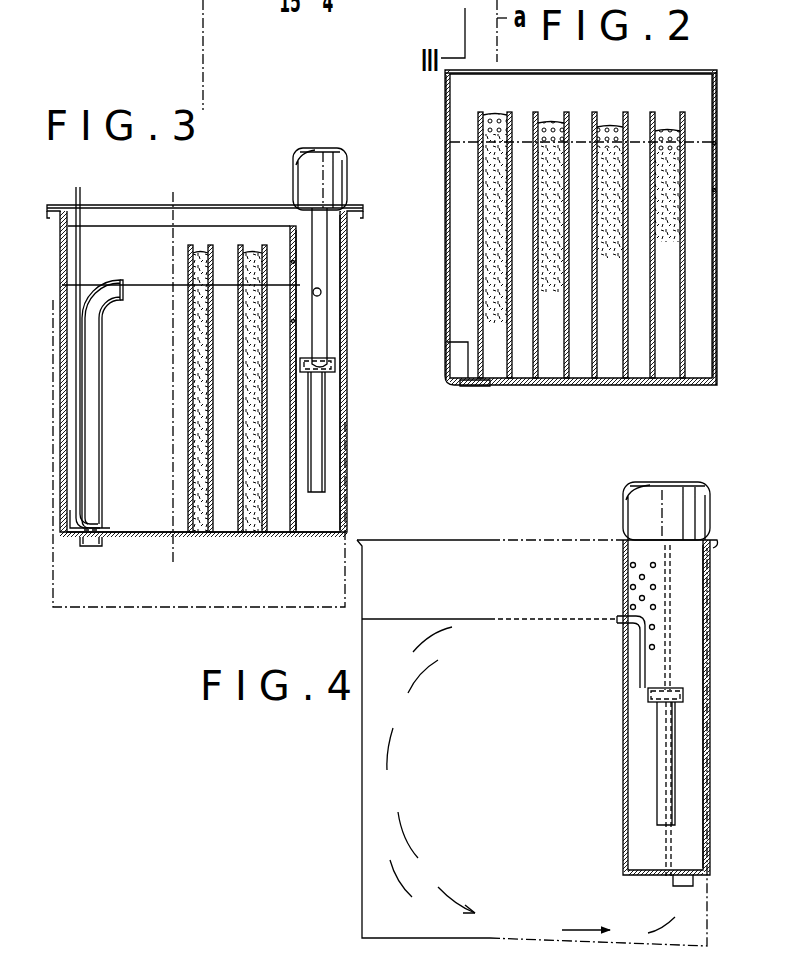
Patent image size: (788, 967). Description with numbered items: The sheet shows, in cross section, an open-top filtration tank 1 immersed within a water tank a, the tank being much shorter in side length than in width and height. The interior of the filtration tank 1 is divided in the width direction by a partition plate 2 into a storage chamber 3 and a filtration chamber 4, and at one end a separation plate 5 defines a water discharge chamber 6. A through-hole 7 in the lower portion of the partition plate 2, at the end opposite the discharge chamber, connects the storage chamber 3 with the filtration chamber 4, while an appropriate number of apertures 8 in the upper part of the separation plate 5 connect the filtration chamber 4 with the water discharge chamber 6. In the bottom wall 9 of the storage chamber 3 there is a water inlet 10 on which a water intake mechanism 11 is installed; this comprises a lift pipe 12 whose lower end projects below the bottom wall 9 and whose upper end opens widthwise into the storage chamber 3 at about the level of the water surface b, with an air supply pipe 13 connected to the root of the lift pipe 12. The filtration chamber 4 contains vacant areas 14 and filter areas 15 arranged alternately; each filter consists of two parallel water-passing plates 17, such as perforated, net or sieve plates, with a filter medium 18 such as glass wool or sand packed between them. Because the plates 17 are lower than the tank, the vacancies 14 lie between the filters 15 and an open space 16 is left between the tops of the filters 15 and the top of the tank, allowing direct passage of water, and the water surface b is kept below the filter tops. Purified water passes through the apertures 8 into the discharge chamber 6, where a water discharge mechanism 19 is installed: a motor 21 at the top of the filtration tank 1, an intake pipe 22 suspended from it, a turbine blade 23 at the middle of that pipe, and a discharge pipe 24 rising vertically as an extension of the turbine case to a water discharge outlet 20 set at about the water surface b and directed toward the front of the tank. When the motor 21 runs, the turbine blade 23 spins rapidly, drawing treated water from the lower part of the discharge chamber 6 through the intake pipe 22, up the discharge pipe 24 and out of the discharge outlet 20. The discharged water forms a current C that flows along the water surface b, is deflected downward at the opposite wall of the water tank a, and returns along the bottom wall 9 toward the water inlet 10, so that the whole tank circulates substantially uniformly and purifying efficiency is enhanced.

In FIG. 2, the filtration tank 1 is at (581, 227).
In FIG. 3, the filtration tank 1 is at (349, 457).
In FIG. 4, the filtration tank 1 is at (712, 636).
In FIG. 2, the partition plate 2 is at (718, 78).
In FIG. 3, the partition plate 2 is at (200, 238).
In FIG. 3, the storage chamber 3 is at (158, 243).
In FIG. 2, the filtration chamber 4 is at (465, 226).
In FIG. 3, the filtration chamber 4 is at (238, 240).
In FIG. 2, the separation plate 5 is at (718, 106).
In FIG. 3, the separation plate 5 is at (292, 534).
In FIG. 4, the separation plate 5 is at (710, 765).
In FIG. 3, the water discharge chamber 6 is at (325, 514).
In FIG. 4, the water discharge chamber 6 is at (698, 722).
In FIG. 2, the through-hole 7 is at (452, 360).
In FIG. 3, the through-hole 7 is at (70, 520).
In FIG. 2, the apertures 8 is at (718, 130).
In FIG. 3, the apertures 8 is at (281, 252).
In FIG. 4, the apertures 8 is at (628, 588).
In FIG. 3, the bottom wall 9 is at (128, 538).
In FIG. 4, the bottom wall 9 is at (636, 876).
In FIG. 3, the water inlet 10 is at (90, 565).
In FIG. 4, the water inlet 10 is at (688, 886).
In FIG. 3, the water intake mechanism 11 is at (110, 334).
In FIG. 4, the water intake mechanism 11 is at (677, 878).
In FIG. 3, the lift pipe 12 is at (90, 421).
In FIG. 3, the air supply pipe 13 is at (78, 196).
In FIG. 2, the vacant areas 14 is at (580, 120).
In FIG. 3, the vacant areas 14 is at (276, 542).
In FIG. 2, the filter areas 15 is at (609, 128).
In FIG. 3, the filter areas 15 is at (200, 392).
In FIG. 2, the open space 16 is at (465, 82).
In FIG. 3, the open space 16 is at (262, 226).
In FIG. 2, the water-passing plates 17 is at (513, 245).
In FIG. 3, the water-passing plates 17 is at (242, 425).
In FIG. 2, the filter medium 18 is at (493, 118).
In FIG. 3, the filter medium 18 is at (196, 534).
In FIG. 3, the water discharge mechanism 19 is at (348, 190).
In FIG. 4, the water discharge mechanism 19 is at (714, 525).
In FIG. 3, the water discharge outlet 20 is at (322, 293).
In FIG. 4, the water discharge outlet 20 is at (618, 616).
In FIG. 3, the motor 21 is at (340, 160).
In FIG. 4, the motor 21 is at (697, 500).
In FIG. 3, the intake pipe 22 is at (320, 409).
In FIG. 4, the intake pipe 22 is at (660, 752).
In FIG. 3, the turbine blade 23 is at (340, 367).
In FIG. 4, the turbine blade 23 is at (648, 696).
In FIG. 3, the discharge pipe 24 is at (325, 334).
In FIG. 4, the discharge pipe 24 is at (640, 656).
In FIG. 3, the water tank a is at (58, 249).
In FIG. 4, the water tank a is at (711, 586).
In FIG. 2, the water surface b is at (704, 143).
In FIG. 3, the water surface b is at (146, 285).
In FIG. 4, the water surface b is at (568, 619).
In FIG. 4, the current C is at (572, 628).